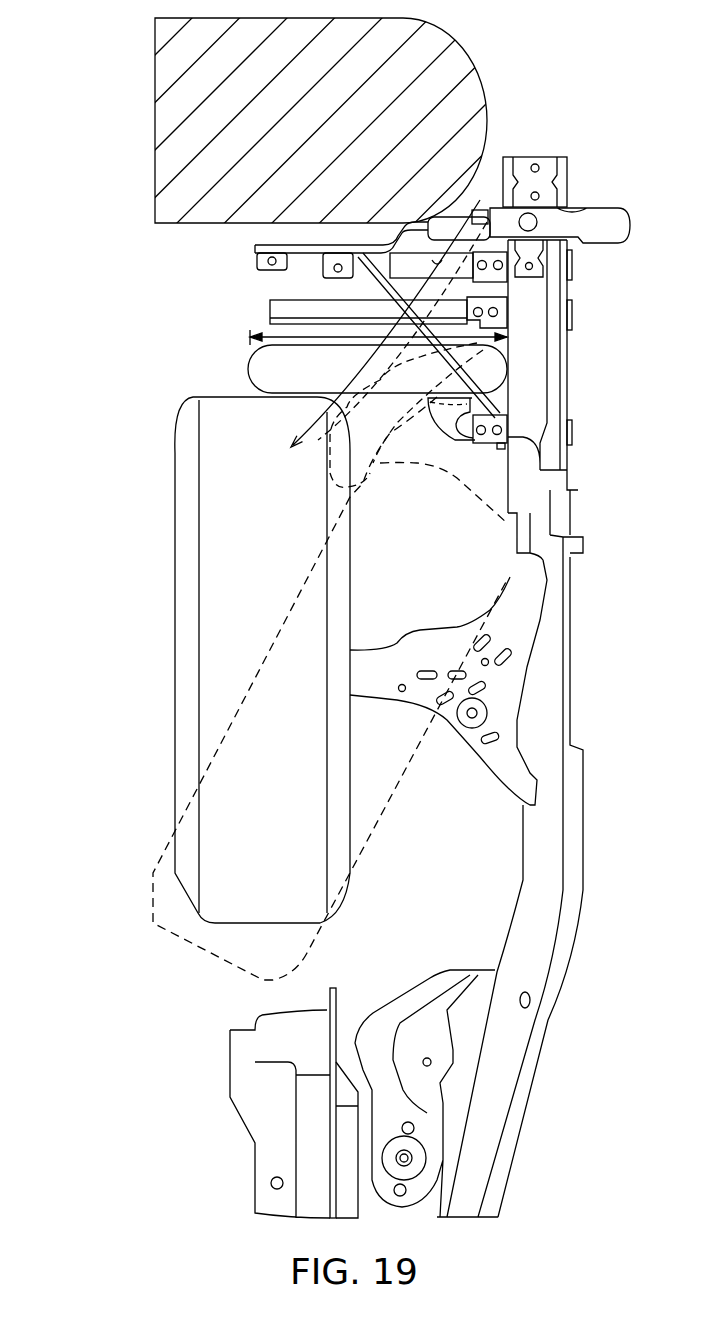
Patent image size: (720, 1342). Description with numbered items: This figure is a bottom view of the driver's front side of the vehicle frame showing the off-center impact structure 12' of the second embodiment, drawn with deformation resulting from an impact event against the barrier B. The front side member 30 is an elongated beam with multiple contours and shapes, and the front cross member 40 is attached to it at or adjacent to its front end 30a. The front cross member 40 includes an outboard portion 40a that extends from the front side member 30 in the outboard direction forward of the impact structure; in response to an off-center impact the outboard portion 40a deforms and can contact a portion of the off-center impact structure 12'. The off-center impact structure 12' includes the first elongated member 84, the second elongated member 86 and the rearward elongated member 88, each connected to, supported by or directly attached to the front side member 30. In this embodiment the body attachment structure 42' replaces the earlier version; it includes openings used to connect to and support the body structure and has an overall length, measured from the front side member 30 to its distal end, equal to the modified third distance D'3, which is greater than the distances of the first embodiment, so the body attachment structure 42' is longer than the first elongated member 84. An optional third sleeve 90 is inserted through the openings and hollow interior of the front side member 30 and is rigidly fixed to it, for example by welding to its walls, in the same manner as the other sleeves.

The bulkhead B is at (212, 117).
The off-center impact structure 12' is at (195, 621).
The front side member 30 is at (567, 363).
The front end 30a is at (552, 168).
The front cross member 40 is at (615, 215).
The outboard portion 40a is at (458, 213).
The body attachment structure 42' is at (351, 371).
The first elongated member 84 is at (278, 311).
The second elongated member 86 is at (412, 262).
The rearward elongated member 88 is at (452, 427).
The third sleeve 90 is at (490, 442).
The third distance D'3 is at (378, 358).